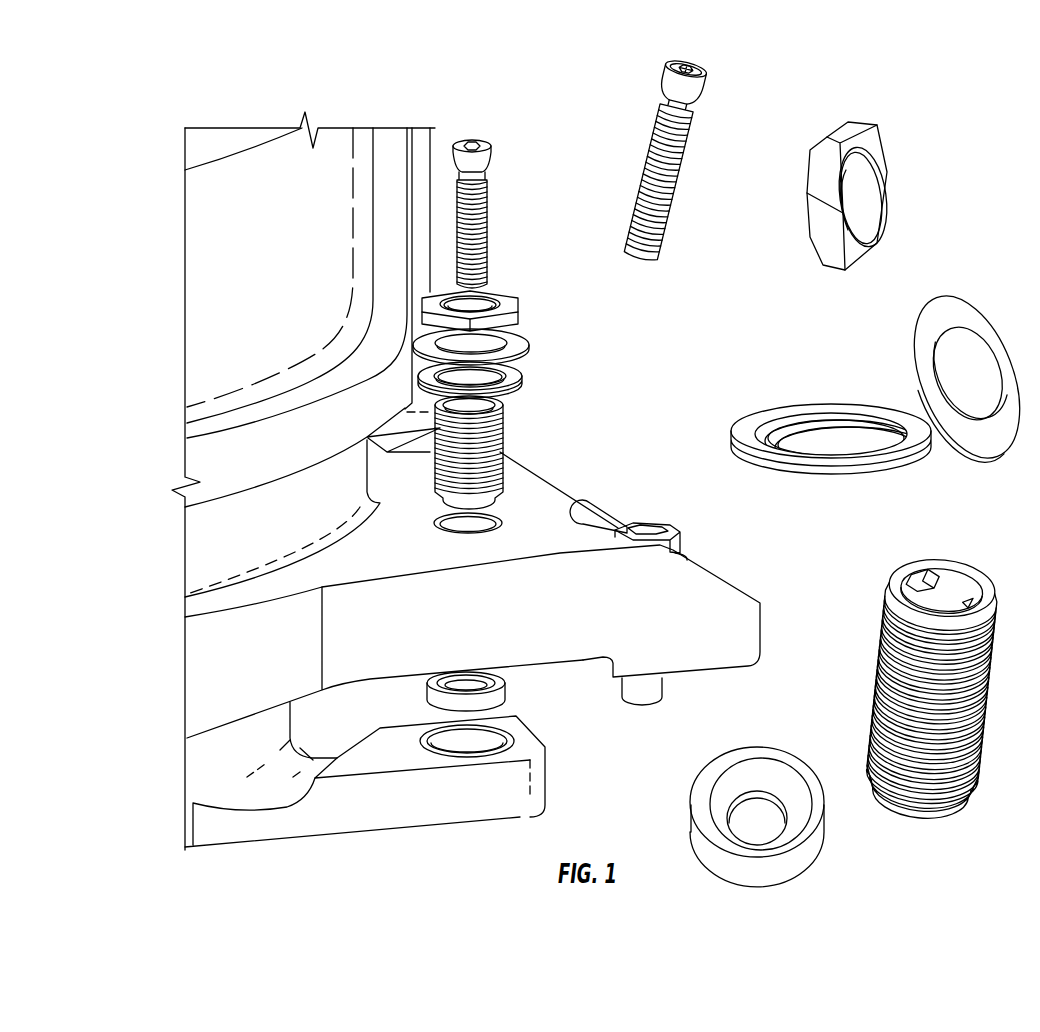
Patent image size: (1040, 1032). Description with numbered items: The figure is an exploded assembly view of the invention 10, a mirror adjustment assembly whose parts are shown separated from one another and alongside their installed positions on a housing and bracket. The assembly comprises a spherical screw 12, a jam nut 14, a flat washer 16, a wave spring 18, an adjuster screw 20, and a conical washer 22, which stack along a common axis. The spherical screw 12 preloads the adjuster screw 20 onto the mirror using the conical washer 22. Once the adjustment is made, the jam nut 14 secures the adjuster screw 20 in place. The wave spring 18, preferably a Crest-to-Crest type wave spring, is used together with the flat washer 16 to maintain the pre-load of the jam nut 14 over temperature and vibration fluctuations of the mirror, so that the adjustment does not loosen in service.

The invention 10 is at (346, 88).
The spherical screw 12 is at (497, 163).
The jam nut 14 is at (527, 307).
The flat washer 16 is at (540, 347).
The wave spring 18 is at (535, 383).
The adjuster screw 20 is at (513, 422).
The conical washer 22 is at (518, 707).